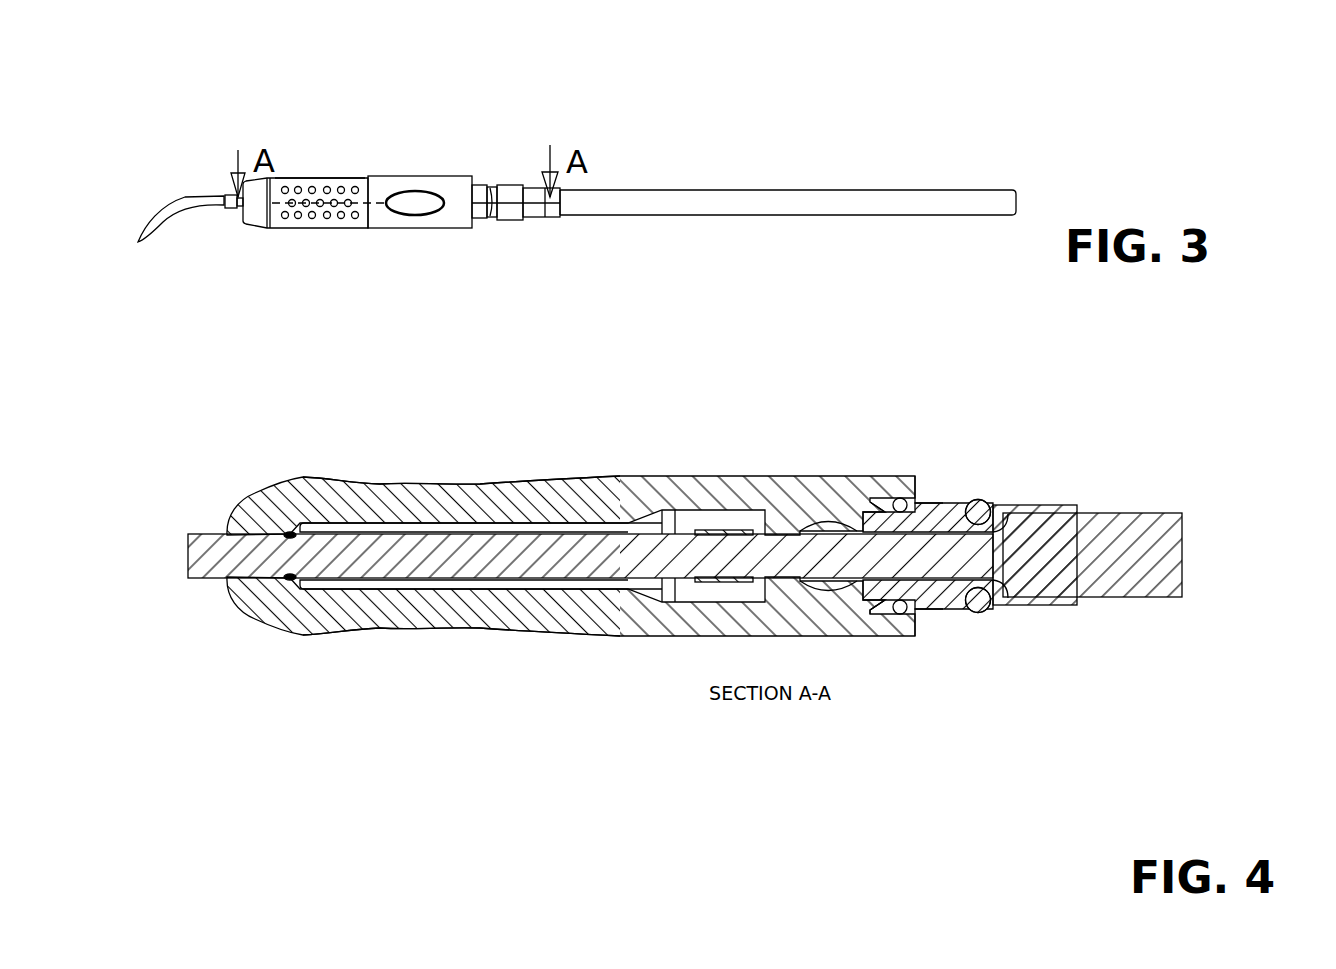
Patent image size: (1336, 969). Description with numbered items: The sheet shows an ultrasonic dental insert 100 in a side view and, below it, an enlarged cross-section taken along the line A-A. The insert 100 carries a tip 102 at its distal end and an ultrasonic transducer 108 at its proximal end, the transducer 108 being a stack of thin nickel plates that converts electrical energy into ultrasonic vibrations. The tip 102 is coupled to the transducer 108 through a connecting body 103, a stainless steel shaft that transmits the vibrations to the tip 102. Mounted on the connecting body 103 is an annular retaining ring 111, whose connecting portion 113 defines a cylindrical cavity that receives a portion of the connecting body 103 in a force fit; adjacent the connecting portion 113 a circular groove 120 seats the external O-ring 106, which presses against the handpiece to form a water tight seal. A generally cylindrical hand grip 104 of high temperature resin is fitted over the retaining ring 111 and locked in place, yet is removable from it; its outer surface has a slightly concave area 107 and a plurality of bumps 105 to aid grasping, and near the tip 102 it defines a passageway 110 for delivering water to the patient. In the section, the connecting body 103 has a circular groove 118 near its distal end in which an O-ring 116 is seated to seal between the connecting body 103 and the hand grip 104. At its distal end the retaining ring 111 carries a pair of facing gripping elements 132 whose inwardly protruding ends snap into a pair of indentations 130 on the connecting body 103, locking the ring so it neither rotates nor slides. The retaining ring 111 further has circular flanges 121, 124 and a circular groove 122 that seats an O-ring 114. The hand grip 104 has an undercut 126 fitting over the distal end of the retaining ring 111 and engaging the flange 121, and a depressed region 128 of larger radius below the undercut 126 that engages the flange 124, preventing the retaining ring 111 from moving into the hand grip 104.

In FIG. 3, the ultrasonic dental insert 100 is at (723, 123).
In FIG. 3, the tip 102 is at (172, 193).
In FIG. 3, the connecting body 103 is at (550, 218).
In FIG. 4, the connecting body 103 is at (1127, 583).
In FIG. 3, the hand grip 104 is at (378, 177).
In FIG. 4, the hand grip 104 is at (617, 476).
In FIG. 3, the bumps 105 is at (317, 229).
In FIG. 4, the bumps 105 is at (415, 483).
In FIG. 3, the O-ring 106 is at (491, 222).
In FIG. 4, the O-ring 106 is at (979, 500).
In FIG. 3, the slightly concave area 107 is at (316, 177).
In FIG. 4, the slightly concave area 107 is at (440, 634).
In FIG. 3, the ultrasonic transducer 108 is at (800, 191).
In FIG. 3, the passageway 110 is at (240, 210).
In FIG. 3, the retaining ring 111 is at (483, 185).
In FIG. 4, the retaining ring 111 is at (937, 609).
In FIG. 3, the connecting portion 113 is at (513, 187).
In FIG. 4, the connecting portion 113 is at (1047, 504).
In FIG. 4, the O-ring 114 is at (910, 502).
In FIG. 4, the O-ring 116 is at (290, 580).
In FIG. 4, the circular groove 118 is at (290, 533).
In FIG. 4, the circular groove 120 is at (1032, 605).
In FIG. 4, the circular flange 121 is at (893, 612).
In FIG. 4, the circular groove 122 is at (882, 616).
In FIG. 4, the circular flange 124 is at (920, 498).
In FIG. 4, the undercut 126 is at (892, 498).
In FIG. 4, the depressed region 128 is at (916, 498).
In FIG. 4, the indentations 130 is at (763, 577).
In FIG. 4, the gripping elements 132 is at (783, 510).